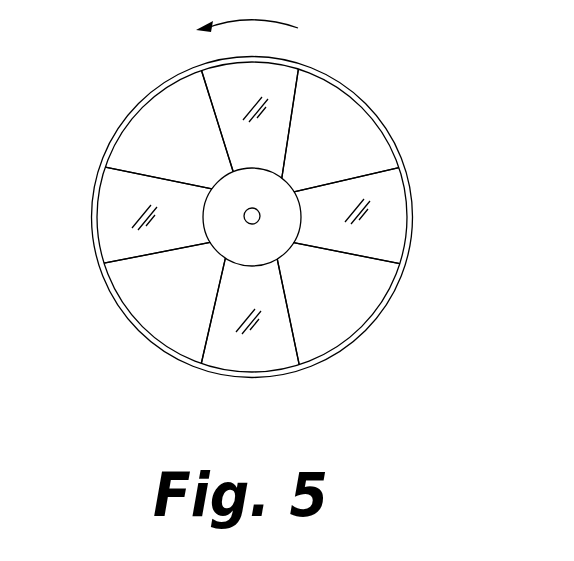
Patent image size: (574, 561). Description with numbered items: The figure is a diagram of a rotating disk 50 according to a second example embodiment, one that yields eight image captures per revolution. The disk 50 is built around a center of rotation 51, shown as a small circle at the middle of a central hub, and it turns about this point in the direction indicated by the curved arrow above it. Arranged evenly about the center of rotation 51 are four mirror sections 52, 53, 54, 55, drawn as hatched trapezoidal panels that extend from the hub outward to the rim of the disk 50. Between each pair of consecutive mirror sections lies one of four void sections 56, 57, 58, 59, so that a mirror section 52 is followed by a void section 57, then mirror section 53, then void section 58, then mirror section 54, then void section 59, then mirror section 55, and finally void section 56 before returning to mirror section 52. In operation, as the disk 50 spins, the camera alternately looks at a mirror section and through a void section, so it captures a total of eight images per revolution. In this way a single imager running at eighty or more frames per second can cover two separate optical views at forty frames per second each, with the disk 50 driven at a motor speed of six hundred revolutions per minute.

The rotating disk 50 is at (384, 112).
The center of rotation 51 is at (259, 221).
The mirror section 52 is at (378, 215).
The mirror section 53 is at (265, 352).
The mirror section 54 is at (113, 222).
The mirror section 55 is at (221, 93).
The void section 56 is at (325, 110).
The void section 57 is at (358, 292).
The void section 58 is at (176, 308).
The void section 59 is at (148, 133).